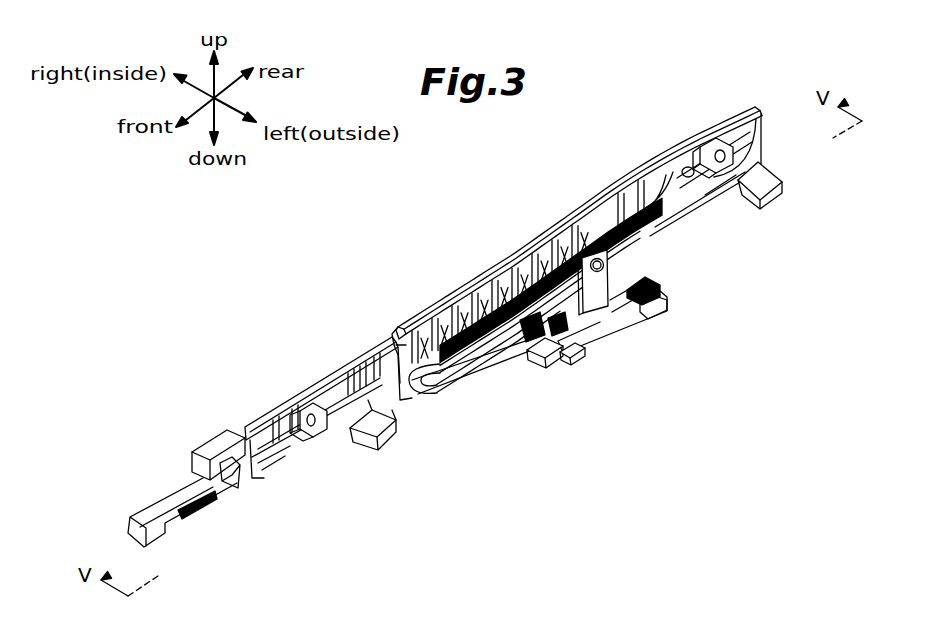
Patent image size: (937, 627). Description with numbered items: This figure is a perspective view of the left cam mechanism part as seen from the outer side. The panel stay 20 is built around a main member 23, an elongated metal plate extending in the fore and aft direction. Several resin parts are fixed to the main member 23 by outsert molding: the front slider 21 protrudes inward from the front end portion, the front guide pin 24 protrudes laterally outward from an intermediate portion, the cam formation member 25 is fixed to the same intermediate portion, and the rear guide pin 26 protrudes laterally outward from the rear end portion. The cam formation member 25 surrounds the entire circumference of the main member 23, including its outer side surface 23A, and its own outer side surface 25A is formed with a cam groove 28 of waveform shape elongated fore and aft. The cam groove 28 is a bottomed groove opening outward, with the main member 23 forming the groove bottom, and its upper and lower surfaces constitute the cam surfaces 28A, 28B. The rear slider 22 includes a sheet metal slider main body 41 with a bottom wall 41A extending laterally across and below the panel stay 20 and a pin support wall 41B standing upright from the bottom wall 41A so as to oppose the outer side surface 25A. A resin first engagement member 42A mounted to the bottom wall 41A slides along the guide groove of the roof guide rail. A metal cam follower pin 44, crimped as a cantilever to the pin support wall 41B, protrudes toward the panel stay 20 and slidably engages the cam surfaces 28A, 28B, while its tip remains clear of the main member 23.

The panel stay 20 is at (488, 190).
The front slider 21 is at (218, 445).
The rear slider 22 is at (662, 253).
The main member 23 is at (362, 347).
The outer side surface 23A is at (392, 353).
The front guide pin 24 is at (390, 448).
The cam formation member 25 is at (482, 273).
The outer side surface 25A is at (481, 338).
The rear guide pin 26 is at (770, 192).
The cam groove 28 is at (462, 372).
The cam surface 28A is at (563, 240).
The cam surface 28B is at (441, 388).
The slider main body 41 is at (533, 320).
The bottom wall 41A is at (538, 347).
The pin support wall 41B is at (608, 335).
The first engagement member 42A is at (663, 285).
The cam follower pin 44 is at (633, 322).